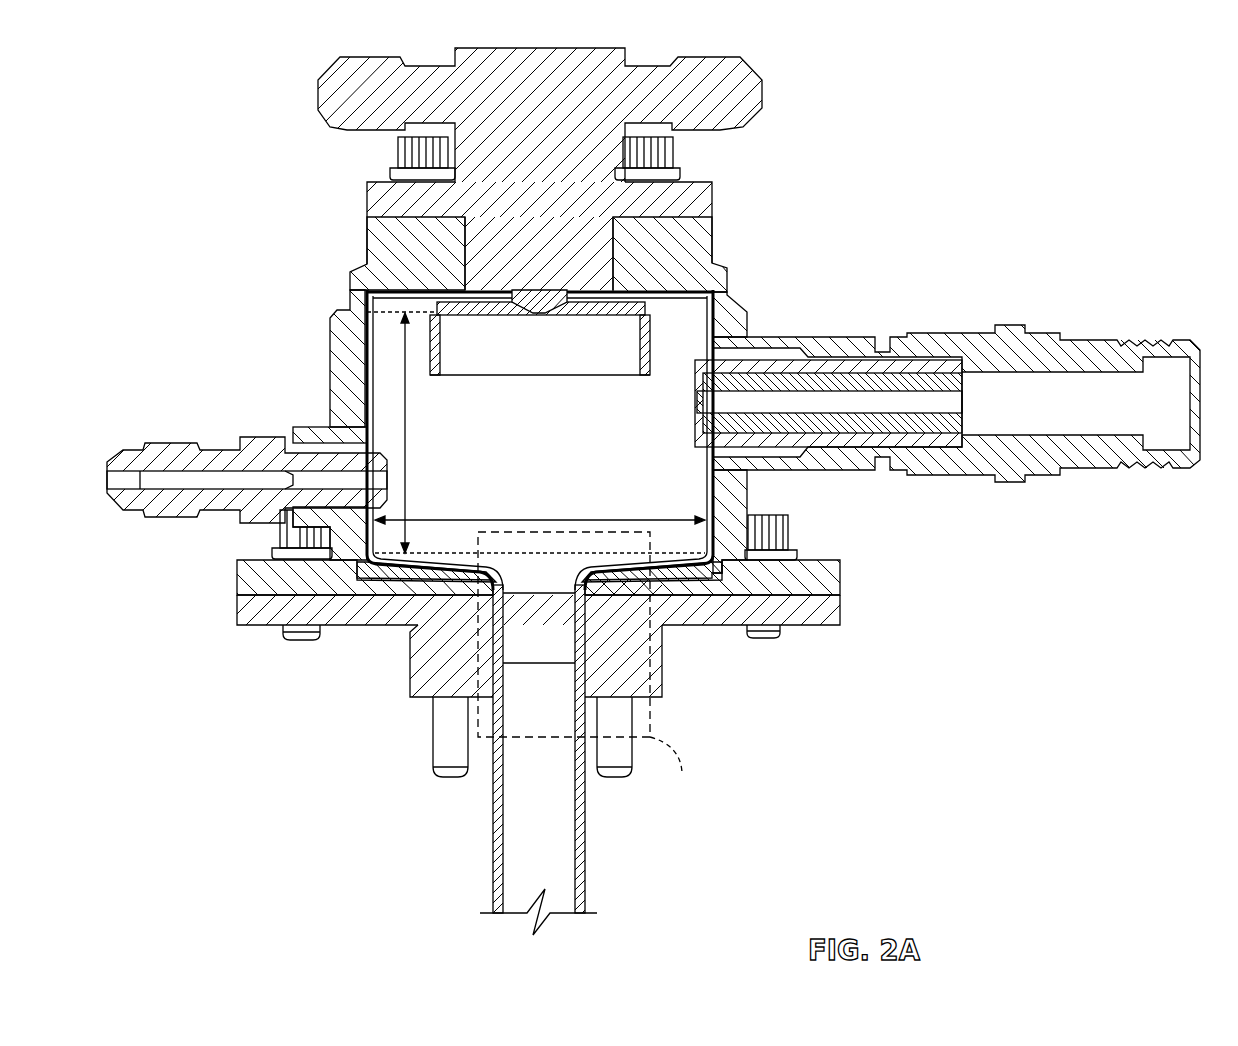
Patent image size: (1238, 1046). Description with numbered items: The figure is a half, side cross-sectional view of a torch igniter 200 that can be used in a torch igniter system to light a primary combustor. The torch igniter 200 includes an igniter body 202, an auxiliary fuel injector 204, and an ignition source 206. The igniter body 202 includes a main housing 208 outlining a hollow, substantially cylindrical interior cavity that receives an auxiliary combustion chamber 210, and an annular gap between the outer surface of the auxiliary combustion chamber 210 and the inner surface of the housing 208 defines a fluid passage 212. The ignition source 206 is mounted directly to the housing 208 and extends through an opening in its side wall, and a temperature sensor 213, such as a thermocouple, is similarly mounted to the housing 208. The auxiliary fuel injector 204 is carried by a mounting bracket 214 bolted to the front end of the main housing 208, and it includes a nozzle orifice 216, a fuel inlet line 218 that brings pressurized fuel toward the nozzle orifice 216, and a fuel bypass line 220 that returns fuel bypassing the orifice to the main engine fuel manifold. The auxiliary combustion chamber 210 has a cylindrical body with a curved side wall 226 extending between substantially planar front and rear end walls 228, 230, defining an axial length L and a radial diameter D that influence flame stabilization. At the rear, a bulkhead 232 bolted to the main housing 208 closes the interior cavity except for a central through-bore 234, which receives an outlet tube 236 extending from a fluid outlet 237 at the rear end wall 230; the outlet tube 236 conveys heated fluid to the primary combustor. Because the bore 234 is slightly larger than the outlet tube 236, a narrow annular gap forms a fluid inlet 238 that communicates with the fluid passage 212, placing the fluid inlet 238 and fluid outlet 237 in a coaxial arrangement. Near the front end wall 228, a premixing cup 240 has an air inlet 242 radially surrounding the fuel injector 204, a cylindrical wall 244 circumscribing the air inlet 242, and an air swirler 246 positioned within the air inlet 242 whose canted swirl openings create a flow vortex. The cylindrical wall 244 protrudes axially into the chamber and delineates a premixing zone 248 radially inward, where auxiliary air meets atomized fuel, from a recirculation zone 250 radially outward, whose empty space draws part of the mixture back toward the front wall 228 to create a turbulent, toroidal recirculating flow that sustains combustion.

The torch igniter 200 is at (653, 488).
The igniter body 202 is at (551, 473).
The auxiliary fuel injector 204 is at (572, 232).
The ignition source 206 is at (939, 332).
The main housing 208 is at (714, 230).
The auxiliary combustion chamber 210 is at (358, 358).
The fluid passage 212 is at (712, 506).
The temperature sensor 213 is at (180, 446).
The mounting bracket 214 is at (366, 193).
The nozzle orifice 216 is at (538, 316).
The fuel inlet line 218 is at (747, 64).
The fuel bypass line 220 is at (337, 80).
The curved side wall 226 is at (770, 532).
The front end wall 228 is at (678, 308).
The rear end wall 230 is at (688, 562).
The bulkhead 232 is at (406, 664).
The central through-bore 234 is at (588, 654).
The outlet tube 236 is at (584, 836).
The fluid outlet 237 is at (556, 582).
The fluid inlet 238 is at (590, 684).
The premixing cup 240 is at (652, 352).
The air inlet 242 is at (430, 306).
The cylindrical wall 244 is at (441, 362).
The air swirler 246 is at (601, 318).
The premixing zone 248 is at (525, 360).
The recirculation zone 250 is at (392, 347).